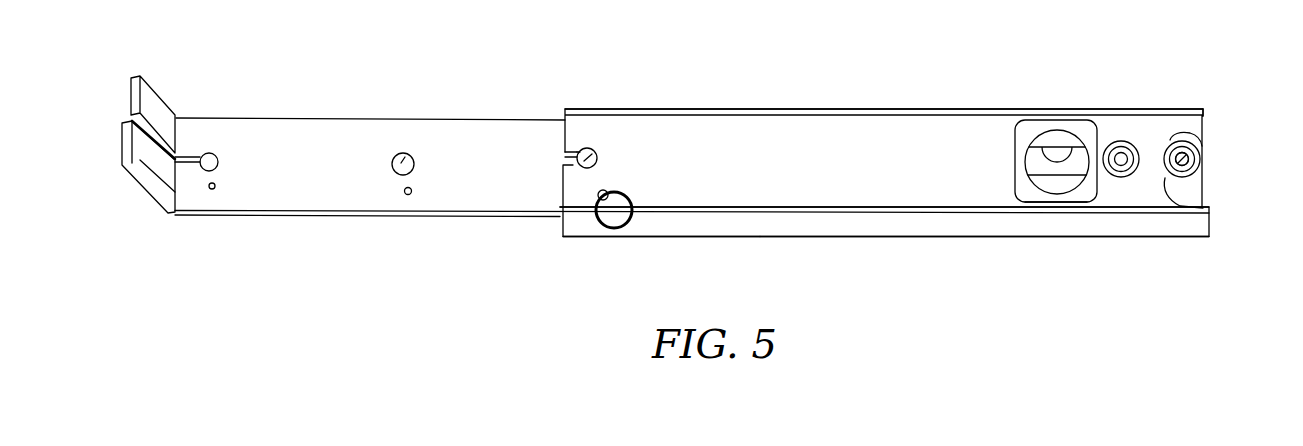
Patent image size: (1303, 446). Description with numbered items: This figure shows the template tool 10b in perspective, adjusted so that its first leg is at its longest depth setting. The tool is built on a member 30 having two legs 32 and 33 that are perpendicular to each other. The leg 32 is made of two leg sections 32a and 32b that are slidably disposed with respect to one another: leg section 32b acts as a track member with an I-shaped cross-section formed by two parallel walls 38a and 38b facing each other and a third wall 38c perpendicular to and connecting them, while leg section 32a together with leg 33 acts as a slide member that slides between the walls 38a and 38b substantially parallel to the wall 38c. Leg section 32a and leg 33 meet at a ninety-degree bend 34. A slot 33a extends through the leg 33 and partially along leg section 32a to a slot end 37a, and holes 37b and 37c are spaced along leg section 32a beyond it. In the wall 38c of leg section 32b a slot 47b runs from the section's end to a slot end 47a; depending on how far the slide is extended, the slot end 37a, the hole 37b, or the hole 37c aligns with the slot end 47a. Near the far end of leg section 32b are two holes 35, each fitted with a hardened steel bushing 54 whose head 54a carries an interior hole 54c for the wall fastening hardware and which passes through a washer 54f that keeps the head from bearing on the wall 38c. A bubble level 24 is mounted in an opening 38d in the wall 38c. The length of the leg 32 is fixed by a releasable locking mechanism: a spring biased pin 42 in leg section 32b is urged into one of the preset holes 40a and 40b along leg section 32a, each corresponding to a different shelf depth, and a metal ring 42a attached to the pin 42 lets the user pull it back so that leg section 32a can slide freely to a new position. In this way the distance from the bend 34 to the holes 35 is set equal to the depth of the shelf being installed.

The template tool 10b is at (575, 263).
The bubble level 24 is at (1058, 153).
The member 30 is at (832, 177).
The leg 32 is at (660, 234).
The leg section 32a is at (363, 214).
The leg section 32b is at (982, 227).
The leg 33 is at (143, 183).
The slot 33a is at (130, 97).
The bend 34 is at (172, 195).
The holes 35 is at (1188, 162).
The end of slot 37a is at (218, 162).
The hole 37b is at (403, 160).
The hole 37c is at (588, 158).
The wall 38a is at (870, 117).
The wall 38b is at (747, 234).
The wall 38c is at (1203, 122).
The opening 38d is at (1058, 198).
The hole 40a is at (216, 187).
The hole 40b is at (412, 191).
The spring biased pin 42 is at (606, 190).
The metal ring 42a is at (626, 202).
The slot end 47a is at (596, 158).
The slot 47b is at (578, 158).
The bushing 54 is at (1205, 191).
The head 54a is at (1201, 135).
The interior hole 54c is at (1190, 160).
The washer 54f is at (1209, 217).